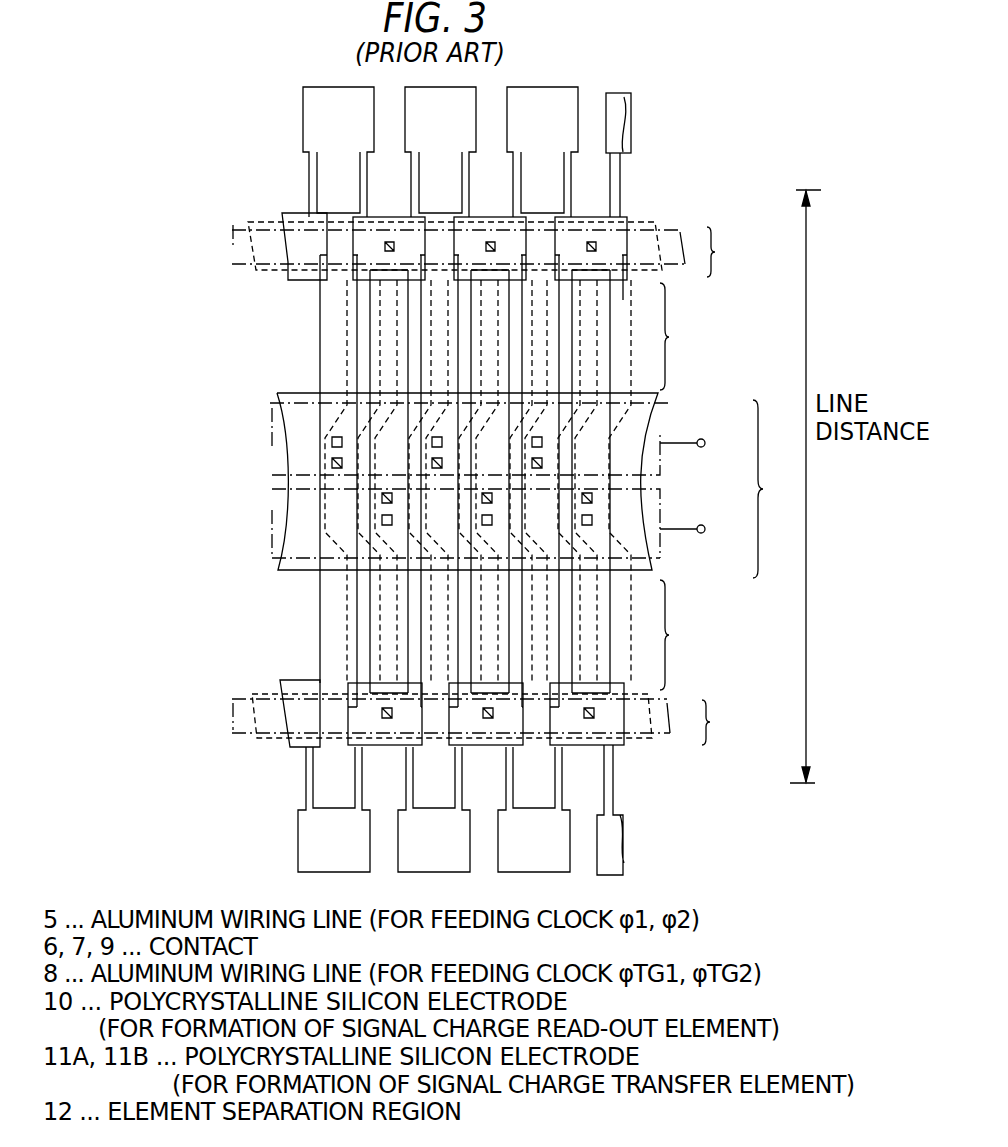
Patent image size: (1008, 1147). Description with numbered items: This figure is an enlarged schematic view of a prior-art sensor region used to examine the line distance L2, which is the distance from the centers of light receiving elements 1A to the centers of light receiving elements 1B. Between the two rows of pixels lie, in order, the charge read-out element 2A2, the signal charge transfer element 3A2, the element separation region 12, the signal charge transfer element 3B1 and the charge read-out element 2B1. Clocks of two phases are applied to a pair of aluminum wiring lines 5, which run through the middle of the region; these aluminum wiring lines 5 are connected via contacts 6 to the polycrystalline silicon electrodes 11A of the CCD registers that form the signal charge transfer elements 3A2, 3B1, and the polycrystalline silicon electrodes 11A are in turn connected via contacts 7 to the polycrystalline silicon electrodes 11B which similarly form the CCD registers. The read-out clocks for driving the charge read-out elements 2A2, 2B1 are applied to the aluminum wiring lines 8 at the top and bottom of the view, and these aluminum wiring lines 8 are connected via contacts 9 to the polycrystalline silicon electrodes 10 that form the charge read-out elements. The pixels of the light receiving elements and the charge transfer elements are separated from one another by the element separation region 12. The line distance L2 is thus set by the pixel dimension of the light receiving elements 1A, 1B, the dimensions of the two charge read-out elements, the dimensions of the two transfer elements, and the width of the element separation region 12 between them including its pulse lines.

The light receiving elements 1A is at (597, 167).
The light receiving elements 1B is at (612, 802).
The aluminum wiring lines 5 is at (652, 417).
The contacts 6 is at (332, 442).
The contacts 7 is at (332, 463).
The aluminum wiring lines 8 is at (670, 237).
The contacts 9 is at (383, 247).
The polycrystalline silicon electrodes 10 is at (642, 224).
The polycrystalline silicon electrodes 11A is at (350, 302).
The polycrystalline silicon electrodes 11B is at (327, 350).
The element separation region 12 is at (617, 103).
The charge read-out element 2A2 is at (736, 252).
The signal charge transfer element 3A2 is at (710, 336).
The signal charge transfer element 3B1 is at (689, 635).
The charge read-out element 2B1 is at (731, 722).
The line distance L2 is at (773, 489).